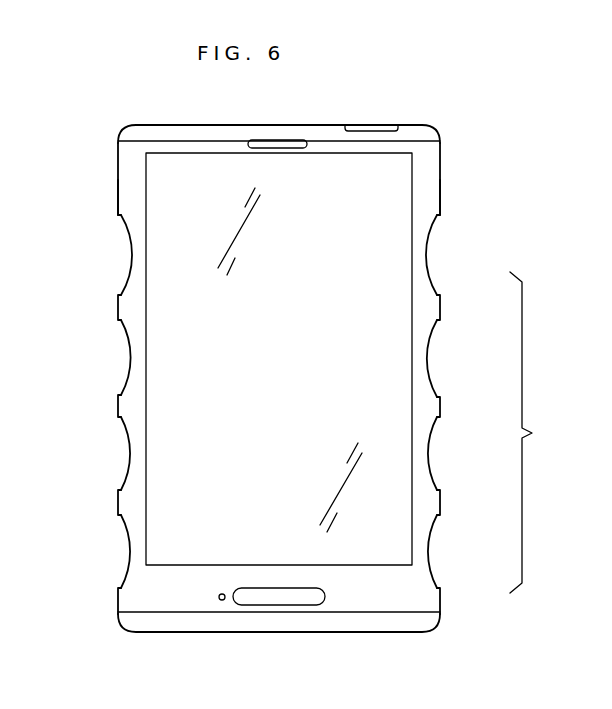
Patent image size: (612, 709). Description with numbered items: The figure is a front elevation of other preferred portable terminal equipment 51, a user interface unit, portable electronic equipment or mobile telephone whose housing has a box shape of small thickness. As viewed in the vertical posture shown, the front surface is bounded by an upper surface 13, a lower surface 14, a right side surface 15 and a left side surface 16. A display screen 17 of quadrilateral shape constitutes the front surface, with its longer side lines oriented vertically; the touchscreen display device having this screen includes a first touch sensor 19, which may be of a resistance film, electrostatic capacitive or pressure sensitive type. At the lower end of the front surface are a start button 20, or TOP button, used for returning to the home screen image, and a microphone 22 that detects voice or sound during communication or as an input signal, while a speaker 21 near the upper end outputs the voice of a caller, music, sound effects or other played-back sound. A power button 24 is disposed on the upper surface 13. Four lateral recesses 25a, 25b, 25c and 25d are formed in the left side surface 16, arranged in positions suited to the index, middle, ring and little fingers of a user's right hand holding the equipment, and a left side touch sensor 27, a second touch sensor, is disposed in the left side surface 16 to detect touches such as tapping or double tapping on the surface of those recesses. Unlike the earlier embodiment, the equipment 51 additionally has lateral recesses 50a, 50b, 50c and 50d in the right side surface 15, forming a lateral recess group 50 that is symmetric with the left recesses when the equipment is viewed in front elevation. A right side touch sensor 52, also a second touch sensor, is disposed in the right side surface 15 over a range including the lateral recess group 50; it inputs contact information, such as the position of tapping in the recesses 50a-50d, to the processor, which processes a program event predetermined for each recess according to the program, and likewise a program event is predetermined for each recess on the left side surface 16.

The upper surface 13 is at (182, 124).
The lower surface 14 is at (335, 632).
The right side surface 15 is at (440, 165).
The left side surface 16 is at (118, 182).
The display screen 17 is at (290, 420).
The first touch sensor 19 is at (378, 354).
The start button 20 is at (278, 598).
The speaker 21 is at (292, 148).
The microphone 22 is at (222, 600).
The power button 24 is at (377, 124).
The lateral recess 25a is at (124, 291).
The lateral recess 25b is at (122, 392).
The lateral recess 25c is at (122, 487).
The lateral recess 25d is at (122, 585).
The left side touch sensor 27 is at (124, 213).
The lateral recess group 50 is at (536, 432).
The lateral recess 50a is at (428, 278).
The lateral recess 50b is at (428, 378).
The lateral recess 50c is at (428, 472).
The lateral recess 50d is at (428, 568).
The portable terminal equipment 51 is at (108, 166).
The right side touch sensor 52 is at (428, 200).